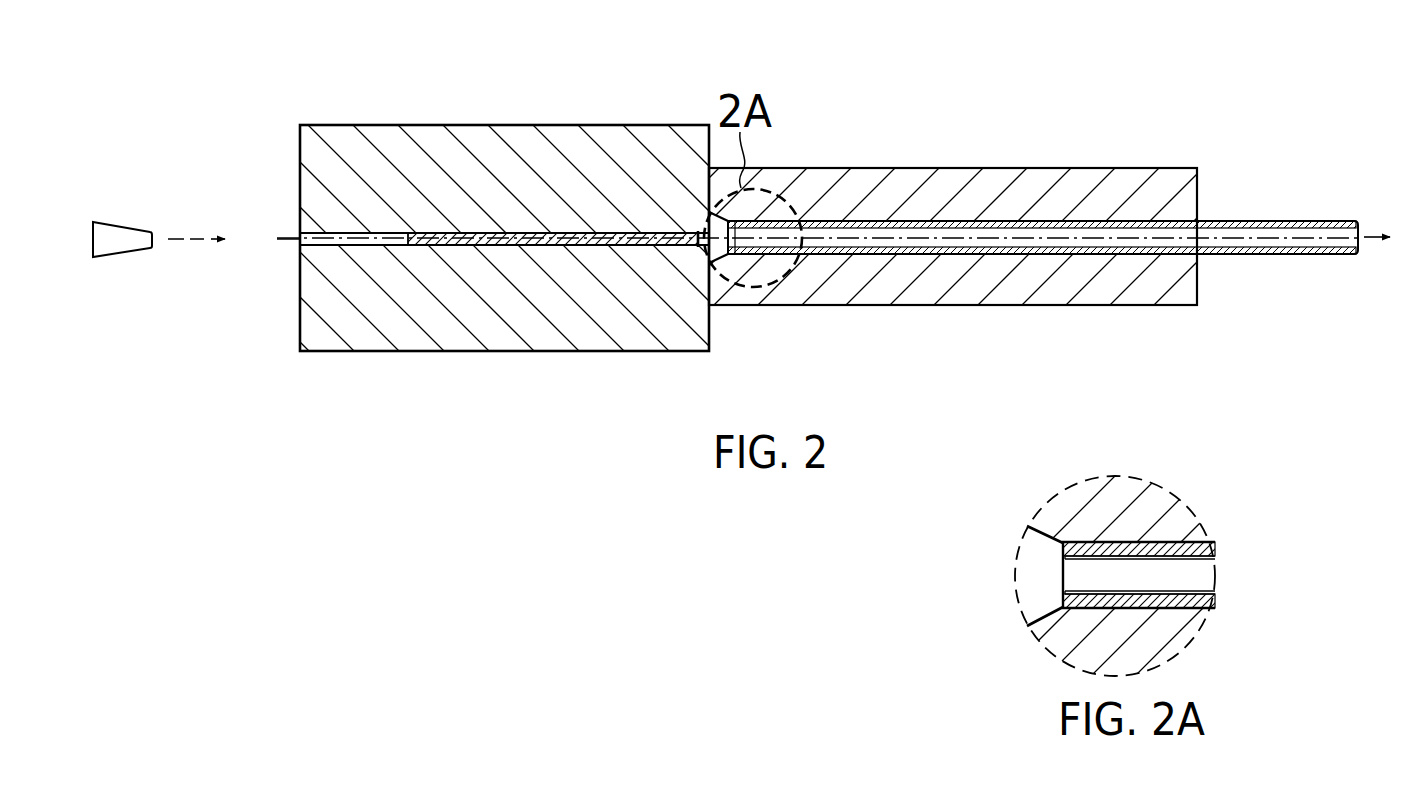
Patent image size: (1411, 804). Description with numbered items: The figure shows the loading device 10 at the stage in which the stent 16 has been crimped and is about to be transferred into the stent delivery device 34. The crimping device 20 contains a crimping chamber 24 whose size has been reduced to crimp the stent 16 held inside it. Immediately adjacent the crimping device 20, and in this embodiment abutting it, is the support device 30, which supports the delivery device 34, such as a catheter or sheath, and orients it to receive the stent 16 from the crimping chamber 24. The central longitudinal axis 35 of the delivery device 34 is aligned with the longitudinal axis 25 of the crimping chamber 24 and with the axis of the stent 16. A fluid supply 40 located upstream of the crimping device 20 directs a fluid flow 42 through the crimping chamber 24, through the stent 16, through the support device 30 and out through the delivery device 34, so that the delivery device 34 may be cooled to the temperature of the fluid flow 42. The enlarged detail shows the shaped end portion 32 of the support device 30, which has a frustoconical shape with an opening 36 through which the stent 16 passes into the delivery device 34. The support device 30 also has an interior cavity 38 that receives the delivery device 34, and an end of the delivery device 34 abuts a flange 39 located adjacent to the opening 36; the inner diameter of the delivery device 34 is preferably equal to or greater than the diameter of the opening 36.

In FIG. 2, the loading device 10 is at (1194, 86).
In FIG. 2, the stent 16 is at (602, 247).
In FIG. 2, the crimping device 20 is at (562, 126).
In FIG. 2, the crimping chamber 24 is at (346, 247).
In FIG. 2, the axis of the crimping chamber 25 is at (281, 236).
In FIG. 2, the support device 30 is at (1193, 197).
In FIG. 2, the shaped end portion 32 is at (713, 262).
In FIG. 2A, the shaped end portion 32 is at (1036, 610).
In FIG. 2, the stent delivery device 34 is at (1140, 256).
In FIG. 2A, the stent delivery device 34 is at (1206, 600).
In FIG. 2, the central longitudinal axis of the stent delivery device 35 is at (1245, 237).
In FIG. 2A, the opening 36 is at (1054, 571).
In FIG. 2A, the interior cavity 38 is at (1205, 556).
In FIG. 2A, the flange 39 is at (1076, 598).
In FIG. 2, the fluid supply 40 is at (121, 257).
In FIG. 2, the fluid flow 42 is at (190, 240).